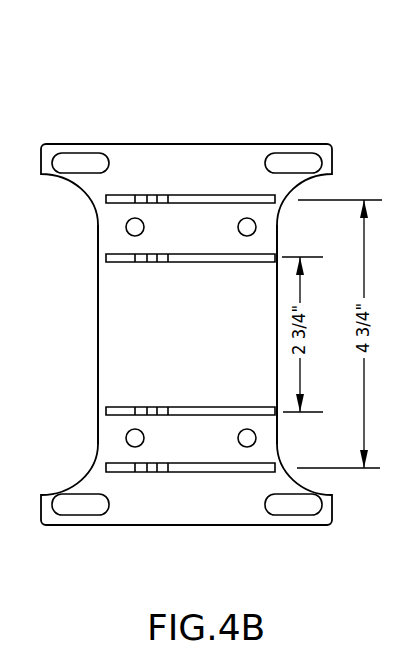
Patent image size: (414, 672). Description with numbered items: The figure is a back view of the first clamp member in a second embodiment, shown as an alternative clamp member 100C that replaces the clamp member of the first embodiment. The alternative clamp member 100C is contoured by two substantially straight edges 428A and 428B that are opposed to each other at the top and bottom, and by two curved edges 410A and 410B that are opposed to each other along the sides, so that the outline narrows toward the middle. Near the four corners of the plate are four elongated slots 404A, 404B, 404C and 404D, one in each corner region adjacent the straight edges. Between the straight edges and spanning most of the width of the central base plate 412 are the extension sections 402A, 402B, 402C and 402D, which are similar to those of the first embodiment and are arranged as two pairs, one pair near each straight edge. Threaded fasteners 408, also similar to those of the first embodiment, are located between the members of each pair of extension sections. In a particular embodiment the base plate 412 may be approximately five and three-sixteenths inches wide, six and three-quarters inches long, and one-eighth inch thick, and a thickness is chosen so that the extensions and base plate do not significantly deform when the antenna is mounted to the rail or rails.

The alternative clamp member 100C is at (290, 83).
The extension section 402A is at (268, 467).
The extension section 402B is at (267, 410).
The extension section 402C is at (271, 255).
The extension section 402D is at (277, 198).
The mounting slot 404A is at (307, 160).
The mounting slot 404B is at (71, 160).
The mounting slot 404C is at (82, 515).
The mounting slot 404D is at (289, 515).
The threaded fastener 408 is at (126, 227).
The curved edge 410A is at (277, 293).
The curved edge 410B is at (98, 295).
The base plate 412 is at (132, 336).
The substantially straight edge 428A is at (195, 527).
The substantially straight edge 428B is at (200, 144).